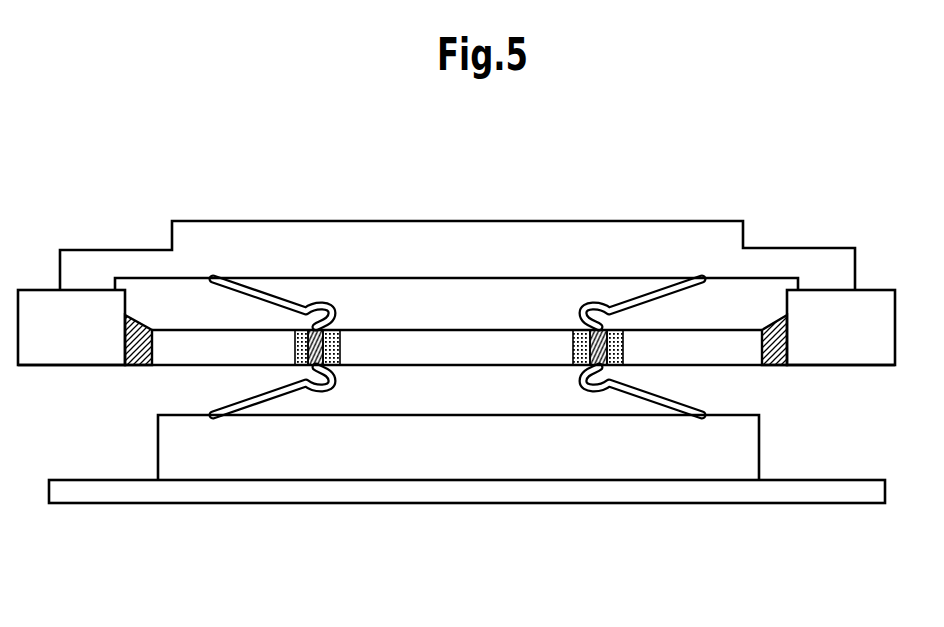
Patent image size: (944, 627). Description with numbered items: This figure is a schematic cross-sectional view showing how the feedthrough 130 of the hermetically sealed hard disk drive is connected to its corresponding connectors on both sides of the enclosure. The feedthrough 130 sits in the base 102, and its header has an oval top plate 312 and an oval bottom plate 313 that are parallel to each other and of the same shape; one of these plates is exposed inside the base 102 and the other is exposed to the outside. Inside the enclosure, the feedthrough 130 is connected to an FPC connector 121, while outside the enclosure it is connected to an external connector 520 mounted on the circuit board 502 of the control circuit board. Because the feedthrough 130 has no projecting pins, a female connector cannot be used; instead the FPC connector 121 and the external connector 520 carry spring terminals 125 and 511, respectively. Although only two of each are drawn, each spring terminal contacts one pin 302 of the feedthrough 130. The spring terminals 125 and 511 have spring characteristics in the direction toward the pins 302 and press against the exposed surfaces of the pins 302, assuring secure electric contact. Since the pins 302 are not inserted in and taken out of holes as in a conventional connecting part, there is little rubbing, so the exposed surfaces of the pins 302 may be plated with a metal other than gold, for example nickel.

The base 102 is at (42, 290).
The FPC connector 121 is at (430, 220).
The spring terminals 125 is at (335, 312).
The feedthrough 130 is at (440, 329).
The pins 302 is at (340, 342).
The top plate 312 is at (673, 327).
The bottom plate 313 is at (210, 367).
The spring terminals 511 is at (630, 388).
The external connector 520 is at (760, 442).
The circuit board 502 is at (828, 504).